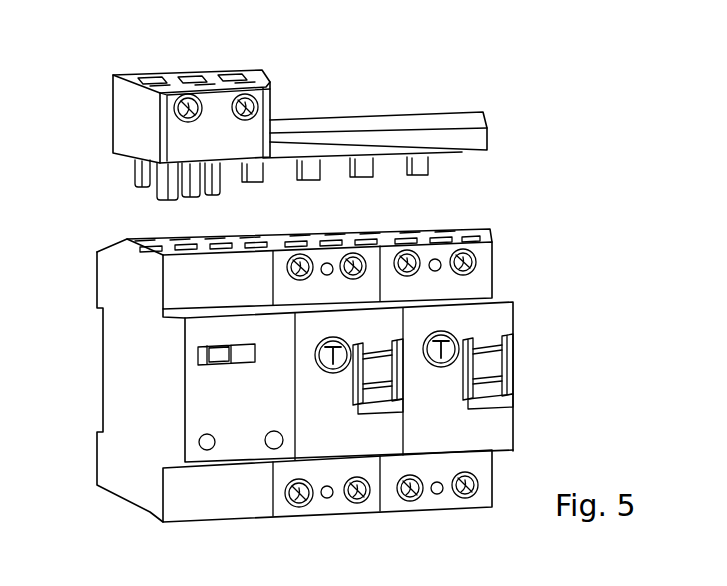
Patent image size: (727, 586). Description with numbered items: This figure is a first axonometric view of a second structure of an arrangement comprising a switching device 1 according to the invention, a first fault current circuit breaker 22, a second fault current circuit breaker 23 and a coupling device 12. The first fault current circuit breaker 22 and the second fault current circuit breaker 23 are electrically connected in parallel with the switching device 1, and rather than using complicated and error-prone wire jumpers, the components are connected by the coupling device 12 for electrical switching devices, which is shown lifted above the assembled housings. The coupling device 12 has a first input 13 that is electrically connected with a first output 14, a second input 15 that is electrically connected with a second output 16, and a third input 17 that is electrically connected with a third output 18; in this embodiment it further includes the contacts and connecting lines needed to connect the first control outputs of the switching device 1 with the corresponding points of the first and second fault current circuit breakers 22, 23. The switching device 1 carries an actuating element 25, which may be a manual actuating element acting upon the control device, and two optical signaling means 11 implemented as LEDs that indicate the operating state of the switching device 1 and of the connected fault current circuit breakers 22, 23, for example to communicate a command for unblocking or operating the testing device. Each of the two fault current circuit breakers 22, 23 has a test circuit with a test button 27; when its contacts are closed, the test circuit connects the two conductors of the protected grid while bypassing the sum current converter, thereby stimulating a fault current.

The switching device 1 is at (123, 383).
The signaling means 11 is at (267, 444).
The coupling device 12 is at (478, 127).
The first input 13 is at (217, 73).
The first output 14 is at (155, 192).
The second input 15 is at (193, 195).
The second output 16 is at (252, 175).
The third input 17 is at (200, 170).
The third output 18 is at (417, 168).
The first fault current circuit breaker 22 is at (327, 503).
The second fault current circuit breaker 23 is at (482, 497).
The actuating element 25 is at (200, 364).
The test button 27 is at (317, 348).